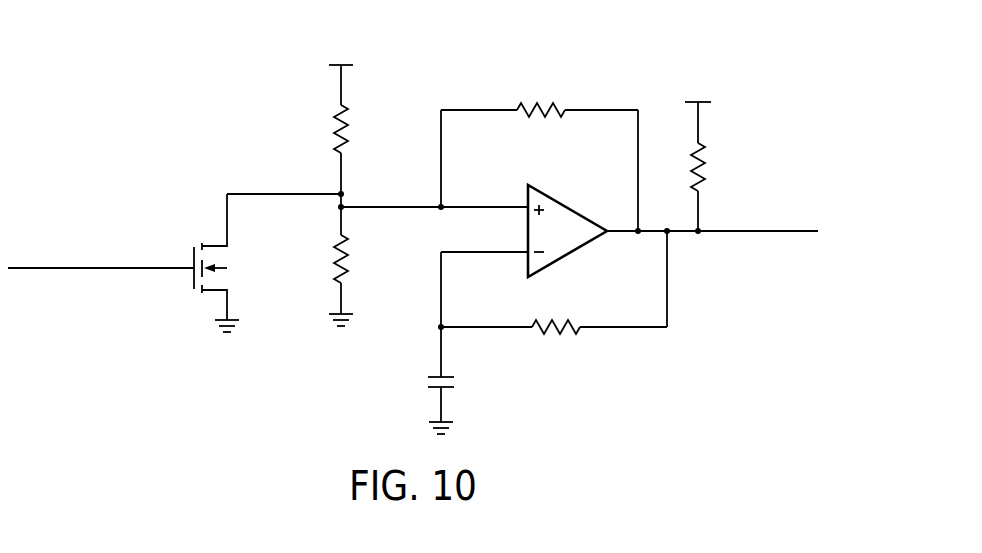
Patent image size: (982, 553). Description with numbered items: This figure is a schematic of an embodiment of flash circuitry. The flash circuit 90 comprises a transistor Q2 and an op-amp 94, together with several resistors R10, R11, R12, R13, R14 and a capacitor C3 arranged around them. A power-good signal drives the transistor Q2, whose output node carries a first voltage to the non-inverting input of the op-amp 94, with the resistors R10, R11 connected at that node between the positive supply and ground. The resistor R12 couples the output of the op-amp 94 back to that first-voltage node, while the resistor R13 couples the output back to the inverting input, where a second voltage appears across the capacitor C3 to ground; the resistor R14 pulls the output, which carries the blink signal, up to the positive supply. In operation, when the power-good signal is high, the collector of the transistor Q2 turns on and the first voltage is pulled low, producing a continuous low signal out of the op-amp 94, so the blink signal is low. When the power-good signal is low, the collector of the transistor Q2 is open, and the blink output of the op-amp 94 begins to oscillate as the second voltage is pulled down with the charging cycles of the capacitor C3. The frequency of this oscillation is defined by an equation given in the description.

The flash circuit 90 is at (413, 226).
The op-amp 94 is at (572, 255).
The transistor Q2 is at (224, 263).
The resistor R10 is at (357, 129).
The resistor R11 is at (357, 259).
The resistor R12 is at (541, 93).
The resistor R13 is at (556, 310).
The resistor R14 is at (714, 167).
The capacitor C3 is at (452, 383).